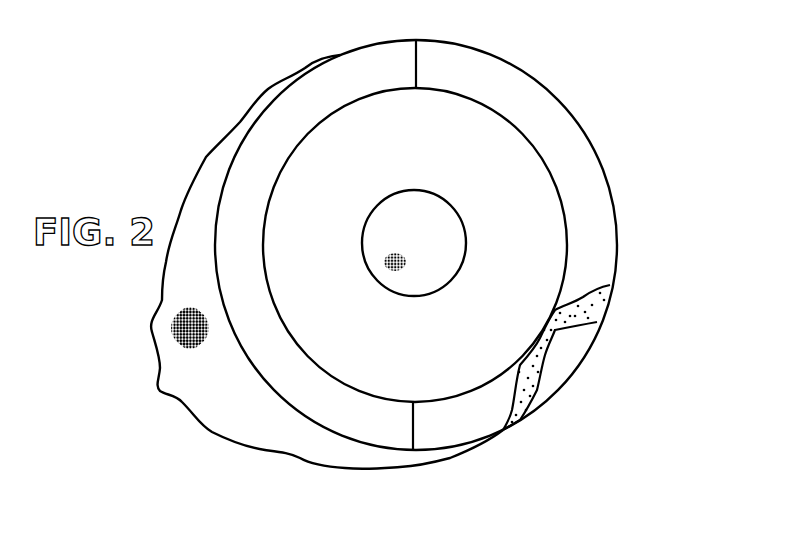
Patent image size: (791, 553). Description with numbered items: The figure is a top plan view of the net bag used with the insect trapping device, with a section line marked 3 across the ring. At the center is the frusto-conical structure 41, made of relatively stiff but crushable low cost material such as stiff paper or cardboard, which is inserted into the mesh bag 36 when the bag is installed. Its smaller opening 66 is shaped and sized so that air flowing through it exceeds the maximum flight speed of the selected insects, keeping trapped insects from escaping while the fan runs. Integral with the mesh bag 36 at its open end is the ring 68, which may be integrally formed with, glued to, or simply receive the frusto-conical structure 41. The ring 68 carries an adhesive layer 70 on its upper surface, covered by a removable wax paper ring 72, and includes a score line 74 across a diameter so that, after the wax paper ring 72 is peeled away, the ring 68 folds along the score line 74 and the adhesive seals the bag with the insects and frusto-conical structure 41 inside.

The mesh bag 36 is at (358, 455).
The frusto-conical structure 41 is at (480, 127).
The smaller opening 66 is at (420, 203).
The ring 68 is at (570, 352).
The adhesive layer 70 is at (605, 303).
The wax paper ring 72 is at (607, 256).
The score line 74 is at (418, 50).
The section line 3 is at (553, 232).